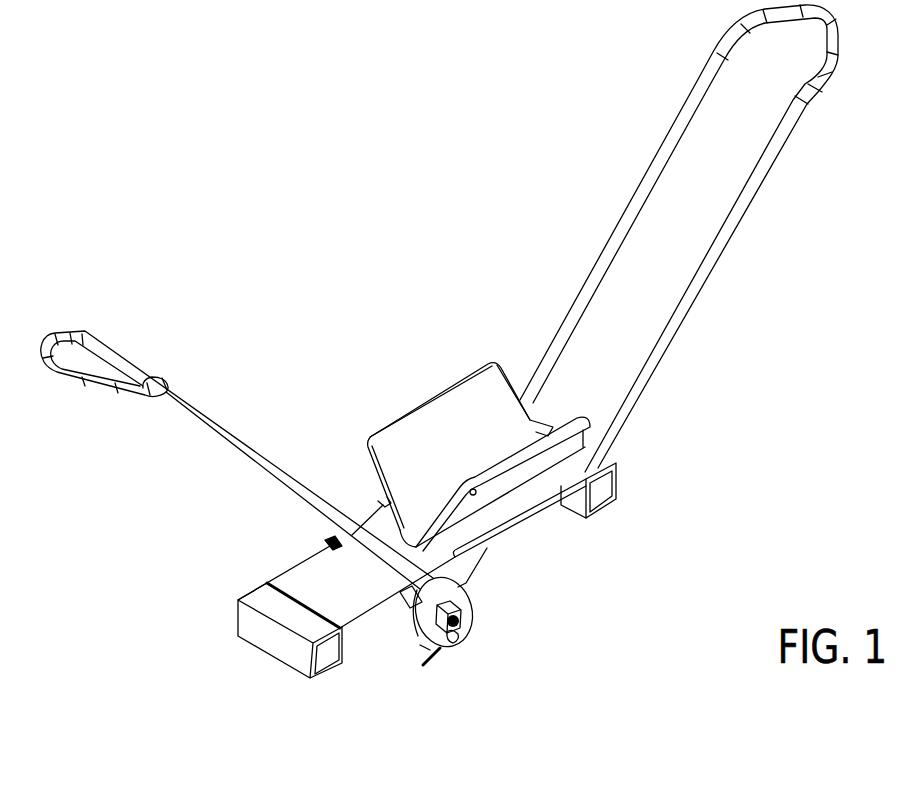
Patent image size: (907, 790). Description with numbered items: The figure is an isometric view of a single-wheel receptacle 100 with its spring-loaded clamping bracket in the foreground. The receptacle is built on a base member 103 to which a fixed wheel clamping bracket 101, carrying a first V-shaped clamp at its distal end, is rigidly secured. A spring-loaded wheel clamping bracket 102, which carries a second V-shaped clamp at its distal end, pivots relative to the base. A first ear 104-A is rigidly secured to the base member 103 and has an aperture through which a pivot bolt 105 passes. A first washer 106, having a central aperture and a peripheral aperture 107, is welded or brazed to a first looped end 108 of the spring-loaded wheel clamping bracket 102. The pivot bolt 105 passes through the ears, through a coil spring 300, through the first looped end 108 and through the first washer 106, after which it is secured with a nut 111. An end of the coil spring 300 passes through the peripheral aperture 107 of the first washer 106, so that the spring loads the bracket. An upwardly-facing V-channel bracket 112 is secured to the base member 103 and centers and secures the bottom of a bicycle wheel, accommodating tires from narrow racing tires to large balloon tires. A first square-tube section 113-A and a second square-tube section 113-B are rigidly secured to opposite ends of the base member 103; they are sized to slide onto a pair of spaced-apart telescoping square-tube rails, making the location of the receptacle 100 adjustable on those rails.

The single-wheel receptacle 100 is at (266, 96).
The fixed wheel clamping bracket 101 is at (664, 157).
The spring-loaded wheel clamping bracket 102 is at (207, 418).
The base member 103 is at (327, 560).
The first ear 104-A is at (465, 568).
The pivot bolt 105 is at (463, 623).
The first washer 106 is at (457, 598).
The peripheral aperture 107 is at (423, 665).
The first looped end 108 is at (420, 597).
The nut 111 is at (427, 645).
The V-channel bracket 112 is at (437, 413).
The first square-tube section 113-A is at (277, 643).
The second square-tube section 113-B is at (603, 485).
The coil spring 300 is at (452, 636).